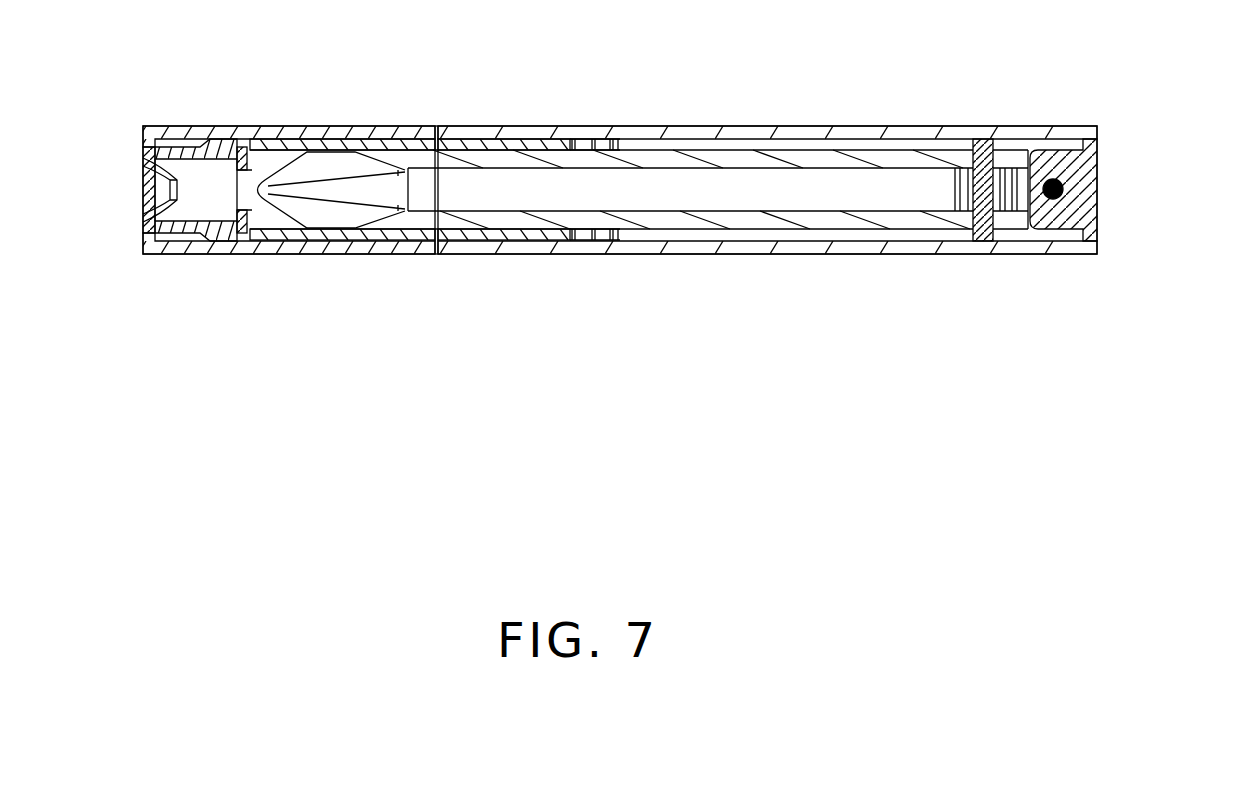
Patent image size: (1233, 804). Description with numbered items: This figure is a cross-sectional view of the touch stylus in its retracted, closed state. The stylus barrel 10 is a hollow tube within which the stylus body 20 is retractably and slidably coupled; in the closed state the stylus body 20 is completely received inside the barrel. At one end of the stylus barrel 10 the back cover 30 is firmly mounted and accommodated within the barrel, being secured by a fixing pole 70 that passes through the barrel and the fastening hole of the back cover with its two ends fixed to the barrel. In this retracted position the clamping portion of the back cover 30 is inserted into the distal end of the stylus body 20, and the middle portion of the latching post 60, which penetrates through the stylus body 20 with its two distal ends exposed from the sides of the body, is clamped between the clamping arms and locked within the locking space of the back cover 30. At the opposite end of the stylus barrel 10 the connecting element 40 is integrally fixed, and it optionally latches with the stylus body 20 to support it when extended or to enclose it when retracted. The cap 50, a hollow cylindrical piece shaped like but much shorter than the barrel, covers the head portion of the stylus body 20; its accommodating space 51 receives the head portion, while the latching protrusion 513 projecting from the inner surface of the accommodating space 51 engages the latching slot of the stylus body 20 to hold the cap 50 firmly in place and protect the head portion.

The stylus barrel 10 is at (695, 132).
The stylus body 20 is at (892, 222).
The back cover 30 is at (1077, 183).
The connecting element 40 is at (528, 237).
The cap 50 is at (253, 125).
The accommodating space 51 is at (322, 228).
The latching protrusion 513 is at (387, 125).
The latching post 60 is at (977, 132).
The fixing pole 70 is at (1080, 165).